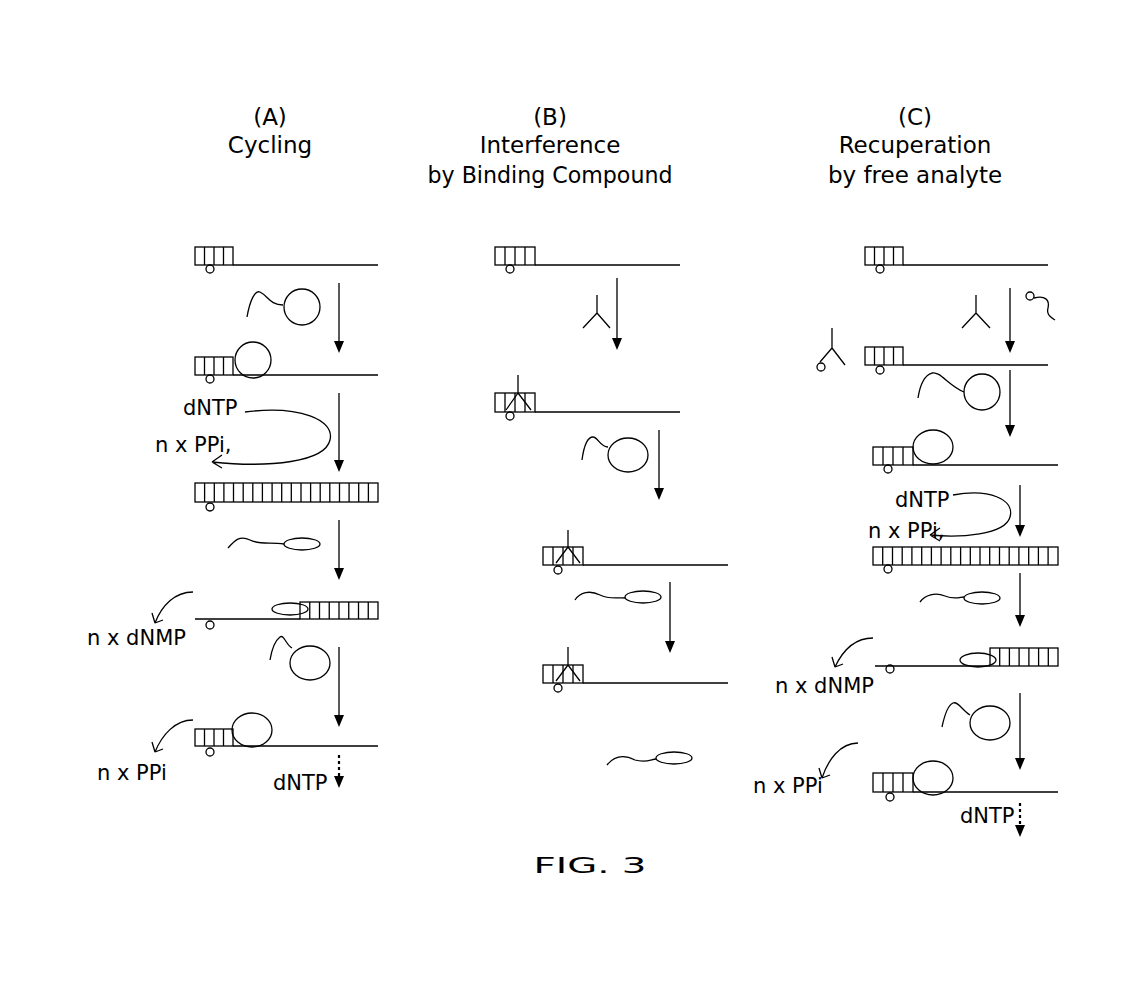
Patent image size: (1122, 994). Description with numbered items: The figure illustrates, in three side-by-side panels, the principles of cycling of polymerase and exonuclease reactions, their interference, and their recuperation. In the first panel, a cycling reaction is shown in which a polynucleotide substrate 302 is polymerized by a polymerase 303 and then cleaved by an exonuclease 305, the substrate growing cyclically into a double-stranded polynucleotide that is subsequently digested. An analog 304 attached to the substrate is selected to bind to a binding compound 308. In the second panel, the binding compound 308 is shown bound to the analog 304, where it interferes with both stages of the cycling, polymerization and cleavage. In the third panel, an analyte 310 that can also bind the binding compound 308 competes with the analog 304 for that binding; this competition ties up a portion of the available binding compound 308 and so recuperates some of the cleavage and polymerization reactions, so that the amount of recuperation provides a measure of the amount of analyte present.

The polynucleotide substrate 302 is at (195, 255).
The polymerase 303 is at (950, 838).
The analog 304 is at (210, 273).
The exonuclease 305 is at (272, 609).
The binding compound 308 is at (597, 300).
The analyte 310 is at (745, 367).